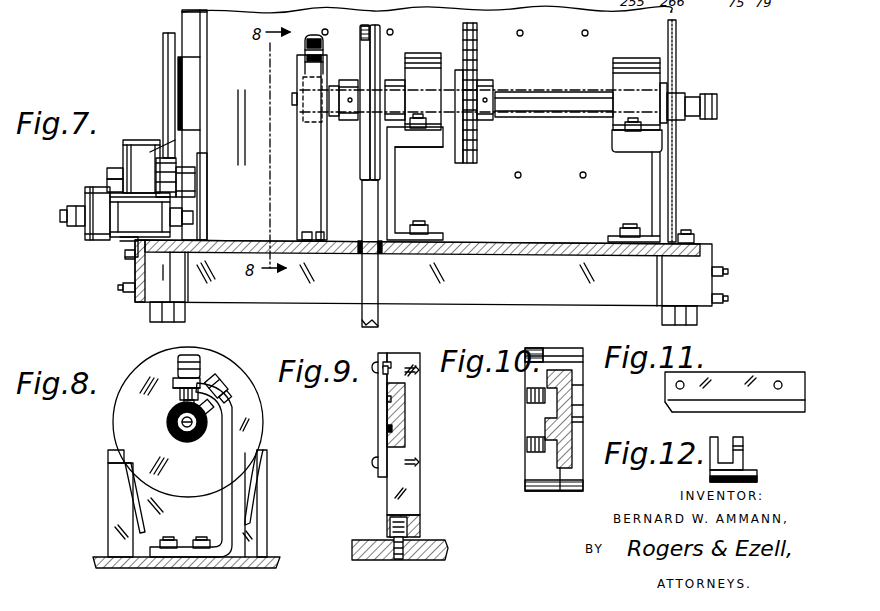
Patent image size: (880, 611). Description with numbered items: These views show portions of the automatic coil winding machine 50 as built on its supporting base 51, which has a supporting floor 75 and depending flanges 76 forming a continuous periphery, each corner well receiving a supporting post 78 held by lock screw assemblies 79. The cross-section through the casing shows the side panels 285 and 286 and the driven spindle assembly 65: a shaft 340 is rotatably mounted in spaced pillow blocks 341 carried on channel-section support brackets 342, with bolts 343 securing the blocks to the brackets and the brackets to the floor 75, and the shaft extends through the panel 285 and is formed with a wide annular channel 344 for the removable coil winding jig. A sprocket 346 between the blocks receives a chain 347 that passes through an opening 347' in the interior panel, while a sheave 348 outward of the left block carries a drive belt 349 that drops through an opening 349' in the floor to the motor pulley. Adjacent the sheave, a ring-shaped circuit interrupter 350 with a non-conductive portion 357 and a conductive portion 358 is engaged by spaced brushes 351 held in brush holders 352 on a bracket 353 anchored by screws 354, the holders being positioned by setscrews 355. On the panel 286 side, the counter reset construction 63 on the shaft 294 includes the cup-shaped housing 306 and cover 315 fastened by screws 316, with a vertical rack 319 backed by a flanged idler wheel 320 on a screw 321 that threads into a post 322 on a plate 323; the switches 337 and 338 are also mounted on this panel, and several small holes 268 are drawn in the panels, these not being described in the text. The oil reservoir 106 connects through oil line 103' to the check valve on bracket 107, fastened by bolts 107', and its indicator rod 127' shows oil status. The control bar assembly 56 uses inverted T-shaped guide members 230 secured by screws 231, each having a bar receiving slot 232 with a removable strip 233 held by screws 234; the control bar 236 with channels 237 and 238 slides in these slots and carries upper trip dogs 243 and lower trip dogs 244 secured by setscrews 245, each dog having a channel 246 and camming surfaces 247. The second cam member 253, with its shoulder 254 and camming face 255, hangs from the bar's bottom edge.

In FIG. 7, the switch 337 is at (190, 19).
In FIG. 7, the rack 319 is at (165, 48).
In FIG. 7, the side panel 286 is at (182, 69).
In FIG. 7, the switch 338 is at (182, 86).
In FIG. 7, the counter reset construction 63 is at (150, 138).
In FIG. 7, the cup-shaped housing 306 is at (150, 152).
In FIG. 7, the cover 315 is at (130, 128).
In FIG. 7, the flanged idler wheel 320 is at (168, 160).
In FIG. 7, the shaft 294 is at (114, 168).
In FIG. 7, the screws 316 is at (107, 180).
In FIG. 7, the post 322 is at (195, 170).
In FIG. 7, the oil reservoir 106 is at (98, 200).
In FIG. 7, the bracket 353 is at (297, 160).
In FIG. 8, the bracket 353 is at (226, 445).
In FIG. 7, the plate 323 is at (205, 190).
In FIG. 7, the screw 321 is at (165, 185).
In FIG. 7, the rod 127' is at (209, 217).
In FIG. 7, the oil line 103' is at (50, 218).
In FIG. 7, the bracket 107 is at (104, 249).
In FIG. 7, the automatic coil winding machine 50 is at (90, 266).
In FIG. 7, the bolts 107' is at (110, 265).
In FIG. 7, the lock screw assemblies 79 is at (120, 288).
In FIG. 7, the supporting base 51 is at (135, 298).
In FIG. 7, the supporting post 78 is at (152, 318).
In FIG. 7, the hole 268 is at (323, 29).
In FIG. 7, the sheave 348 is at (362, 48).
In FIG. 8, the sheave 348 is at (148, 372).
In FIG. 7, the pillow blocks 341 is at (425, 65).
In FIG. 8, the pillow blocks 341 is at (110, 457).
In FIG. 7, the chain 347 is at (497, 93).
In FIG. 7, the opening 347' is at (475, 131).
In FIG. 7, the sprocket 346 is at (490, 80).
In FIG. 7, the driven spindle assembly 65 is at (530, 88).
In FIG. 7, the annular channel 344 is at (692, 95).
In FIG. 7, the shaft 340 is at (297, 96).
In FIG. 8, the shaft 340 is at (167, 422).
In FIG. 7, the bolts 343 is at (418, 130).
In FIG. 7, the side panel 285 is at (678, 168).
In FIG. 7, the support brackets 342 is at (392, 195).
In FIG. 8, the support brackets 342 is at (115, 523).
In FIG. 7, the screws 354 is at (312, 232).
In FIG. 8, the screws 354 is at (203, 540).
In FIG. 7, the supporting floor 75 is at (551, 242).
In FIG. 8, the supporting floor 75 is at (95, 560).
In FIG. 9, the supporting floor 75 is at (449, 554).
In FIG. 7, the depending flanges 76 is at (714, 254).
In FIG. 7, the opening 349' is at (384, 265).
In FIG. 7, the drive belt 349 is at (342, 253).
In FIG. 8, the drive belt 349 is at (108, 498).
In FIG. 7, the brush holders 352 is at (305, 50).
In FIG. 8, the brush holders 352 is at (191, 355).
In FIG. 8, the setscrews 355 is at (200, 380).
In FIG. 8, the brushes 351 is at (205, 383).
In FIG. 8, the conductive portion 358 is at (208, 412).
In FIG. 7, the circuit interrupter 350 is at (303, 73).
In FIG. 8, the circuit interrupter 350 is at (168, 430).
In FIG. 8, the non-conductive portion 357 is at (178, 436).
In FIG. 9, the screws 234 is at (375, 365).
In FIG. 9, the control bar 236 is at (388, 392).
In FIG. 10, the control bar 236 is at (565, 390).
In FIG. 9, the longitudinal channel 237 is at (388, 401).
In FIG. 9, the removable strip 233 is at (388, 429).
In FIG. 9, the longitudinal channel 238 is at (388, 435).
In FIG. 9, the bar receiving slot 232 is at (405, 430).
In FIG. 9, the control bar guide member 230 is at (410, 476).
In FIG. 9, the control bar assembly 56 is at (360, 502).
In FIG. 10, the control bar assembly 56 is at (538, 502).
In FIG. 9, the screws 231 is at (398, 560).
In FIG. 10, the upper trip dogs 243 is at (537, 368).
In FIG. 10, the camming surfaces 247 is at (556, 360).
In FIG. 10, the setscrews 245 is at (527, 445).
In FIG. 10, the channel 246 is at (575, 405).
In FIG. 10, the lower trip dogs 244 is at (528, 470).
In FIG. 11, the second cam member 253 is at (732, 372).
In FIG. 12, the second cam member 253 is at (740, 440).
In FIG. 11, the shoulder 254 is at (782, 400).
In FIG. 12, the shoulder 254 is at (745, 466).
In FIG. 11, the camming face 255 is at (668, 410).
In FIG. 12, the camming face 255 is at (757, 478).